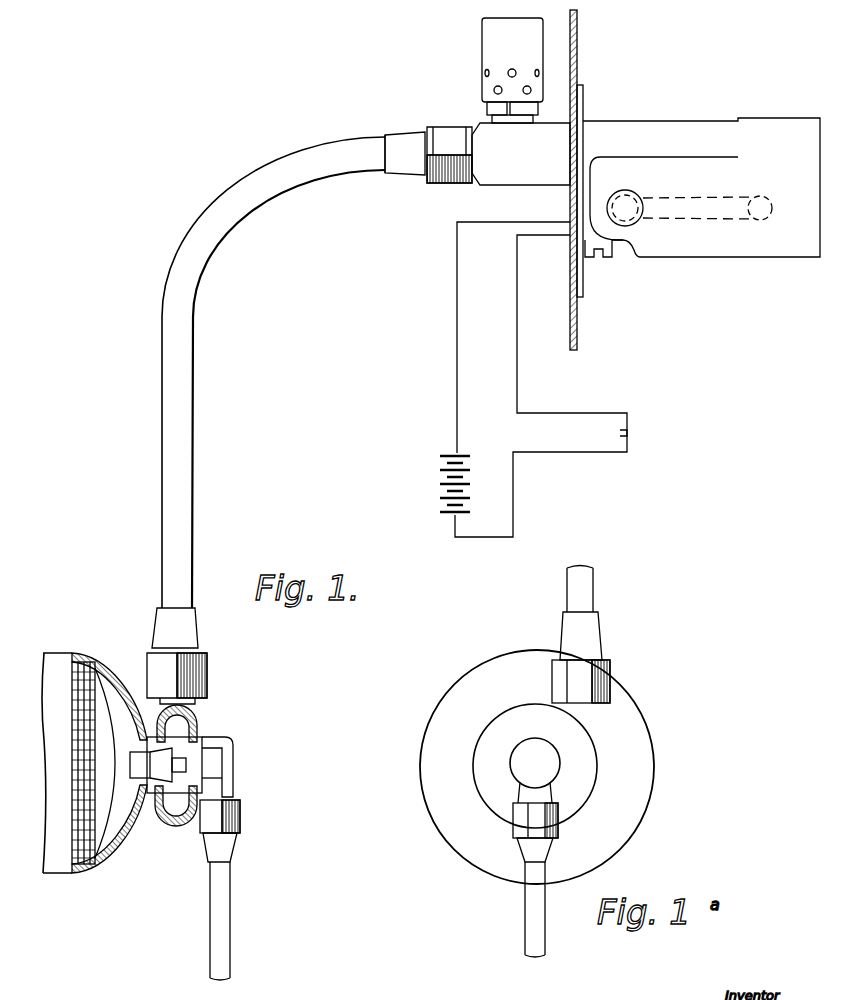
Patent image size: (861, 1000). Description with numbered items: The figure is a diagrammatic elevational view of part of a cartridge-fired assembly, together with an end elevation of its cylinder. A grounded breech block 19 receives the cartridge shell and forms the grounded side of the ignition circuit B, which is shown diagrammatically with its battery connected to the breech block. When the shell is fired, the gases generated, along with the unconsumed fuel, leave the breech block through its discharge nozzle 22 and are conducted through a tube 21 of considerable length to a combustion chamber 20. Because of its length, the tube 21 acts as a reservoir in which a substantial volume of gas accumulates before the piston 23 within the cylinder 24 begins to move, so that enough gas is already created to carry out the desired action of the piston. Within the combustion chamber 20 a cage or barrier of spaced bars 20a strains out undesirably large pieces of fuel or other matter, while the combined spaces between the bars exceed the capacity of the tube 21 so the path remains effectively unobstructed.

In FIG. 1, the breech block 19 is at (708, 248).
In FIG. 1, the combustion chamber 20 is at (193, 713).
In FIG. 1A, the combustion chamber 20 is at (582, 790).
In FIG. 1, the spaced bars 20a is at (162, 787).
In FIG. 1, the tube 21 is at (187, 497).
In FIG. 1A, the tube 21 is at (587, 592).
In FIG. 1, the discharge nozzle 22 is at (498, 101).
In FIG. 1, the piston 23 is at (83, 868).
In FIG. 1, the cylinder 24 is at (55, 863).
In FIG. 1A, the cylinder 24 is at (613, 838).
In FIG. 1, the circuit B is at (533, 379).